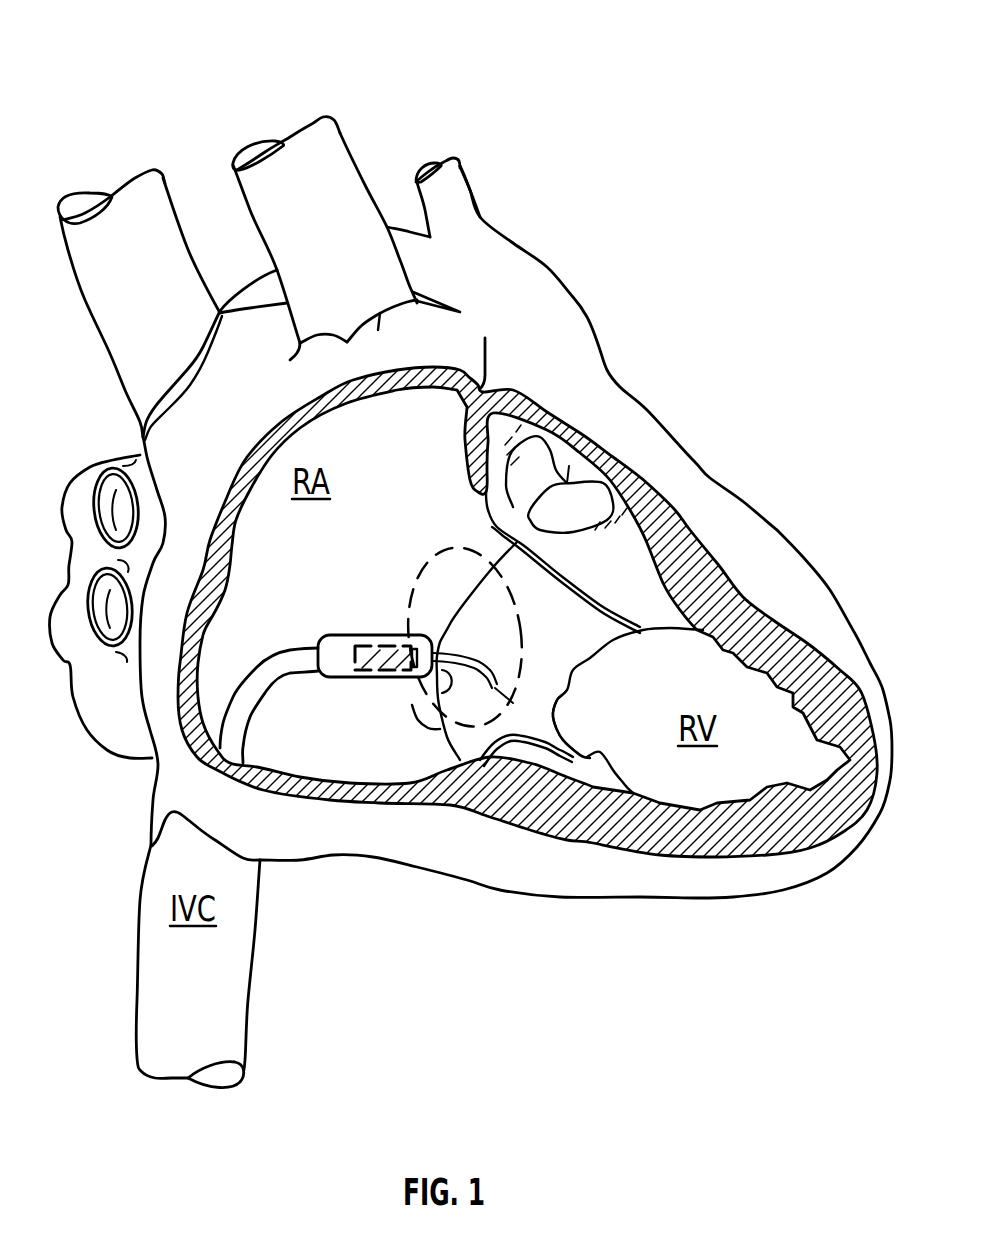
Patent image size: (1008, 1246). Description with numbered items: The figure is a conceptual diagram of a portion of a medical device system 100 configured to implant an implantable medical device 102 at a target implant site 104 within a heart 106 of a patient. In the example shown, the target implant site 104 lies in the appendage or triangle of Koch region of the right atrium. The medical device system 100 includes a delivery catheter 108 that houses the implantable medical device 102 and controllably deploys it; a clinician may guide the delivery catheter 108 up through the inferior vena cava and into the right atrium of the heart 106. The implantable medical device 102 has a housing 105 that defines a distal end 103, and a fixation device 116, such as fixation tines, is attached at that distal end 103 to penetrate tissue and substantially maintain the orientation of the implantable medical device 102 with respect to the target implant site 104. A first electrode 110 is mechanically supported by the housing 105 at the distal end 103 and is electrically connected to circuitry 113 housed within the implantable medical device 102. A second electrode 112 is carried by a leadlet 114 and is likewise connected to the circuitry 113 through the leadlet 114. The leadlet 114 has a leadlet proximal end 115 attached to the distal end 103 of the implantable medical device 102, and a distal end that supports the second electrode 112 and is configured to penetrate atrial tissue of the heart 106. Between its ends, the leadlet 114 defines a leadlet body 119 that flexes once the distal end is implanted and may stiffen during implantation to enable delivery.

The medical device system 100 is at (120, 52).
The implantable medical device 102 is at (340, 678).
The distal end 103 is at (413, 637).
The target implant site 104 is at (413, 712).
The housing 105 is at (347, 637).
The heart 106 is at (587, 313).
The delivery catheter 108 is at (287, 651).
The first electrode 110 is at (443, 648).
The second electrode 112 is at (504, 697).
The circuitry 113 is at (389, 673).
The leadlet 114 is at (517, 684).
The leadlet proximal end 115 is at (440, 657).
The fixation device 116 is at (449, 628).
The leadlet body 119 is at (507, 678).